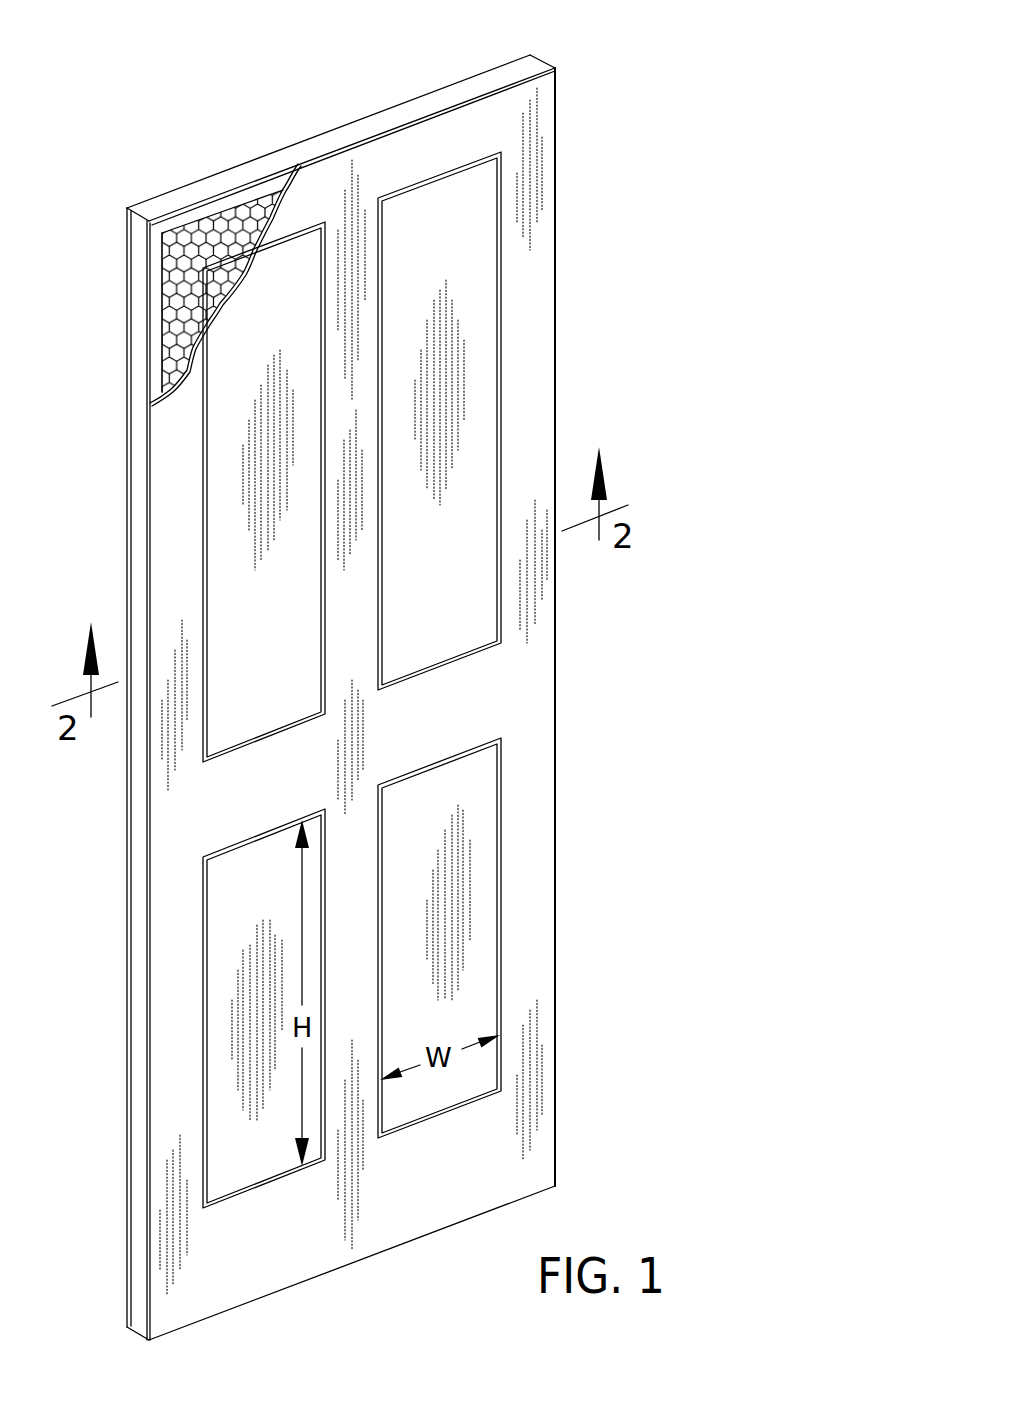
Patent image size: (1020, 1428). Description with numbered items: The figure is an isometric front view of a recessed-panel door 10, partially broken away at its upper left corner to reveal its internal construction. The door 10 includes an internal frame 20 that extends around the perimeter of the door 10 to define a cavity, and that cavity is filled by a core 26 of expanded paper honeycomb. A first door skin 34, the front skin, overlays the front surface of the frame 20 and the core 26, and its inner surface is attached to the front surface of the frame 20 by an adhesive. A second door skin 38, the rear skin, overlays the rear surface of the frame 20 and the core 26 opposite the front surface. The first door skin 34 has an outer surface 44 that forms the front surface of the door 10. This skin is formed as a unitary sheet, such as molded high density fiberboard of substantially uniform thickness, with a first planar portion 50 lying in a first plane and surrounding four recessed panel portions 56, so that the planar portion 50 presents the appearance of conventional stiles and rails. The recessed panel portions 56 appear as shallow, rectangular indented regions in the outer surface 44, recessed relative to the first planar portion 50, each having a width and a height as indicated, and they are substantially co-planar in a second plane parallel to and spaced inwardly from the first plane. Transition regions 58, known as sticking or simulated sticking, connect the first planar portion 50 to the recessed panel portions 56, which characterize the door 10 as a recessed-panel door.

The door 10 is at (624, 133).
The internal frame 20 is at (153, 236).
The core 26 is at (252, 210).
The first door skin 34 is at (312, 190).
The second door skin 38 is at (293, 120).
The outer surface 44 is at (430, 147).
The first planar portion 50 is at (175, 458).
The recessed panel portions 56 is at (472, 384).
The transition regions 58 is at (457, 660).